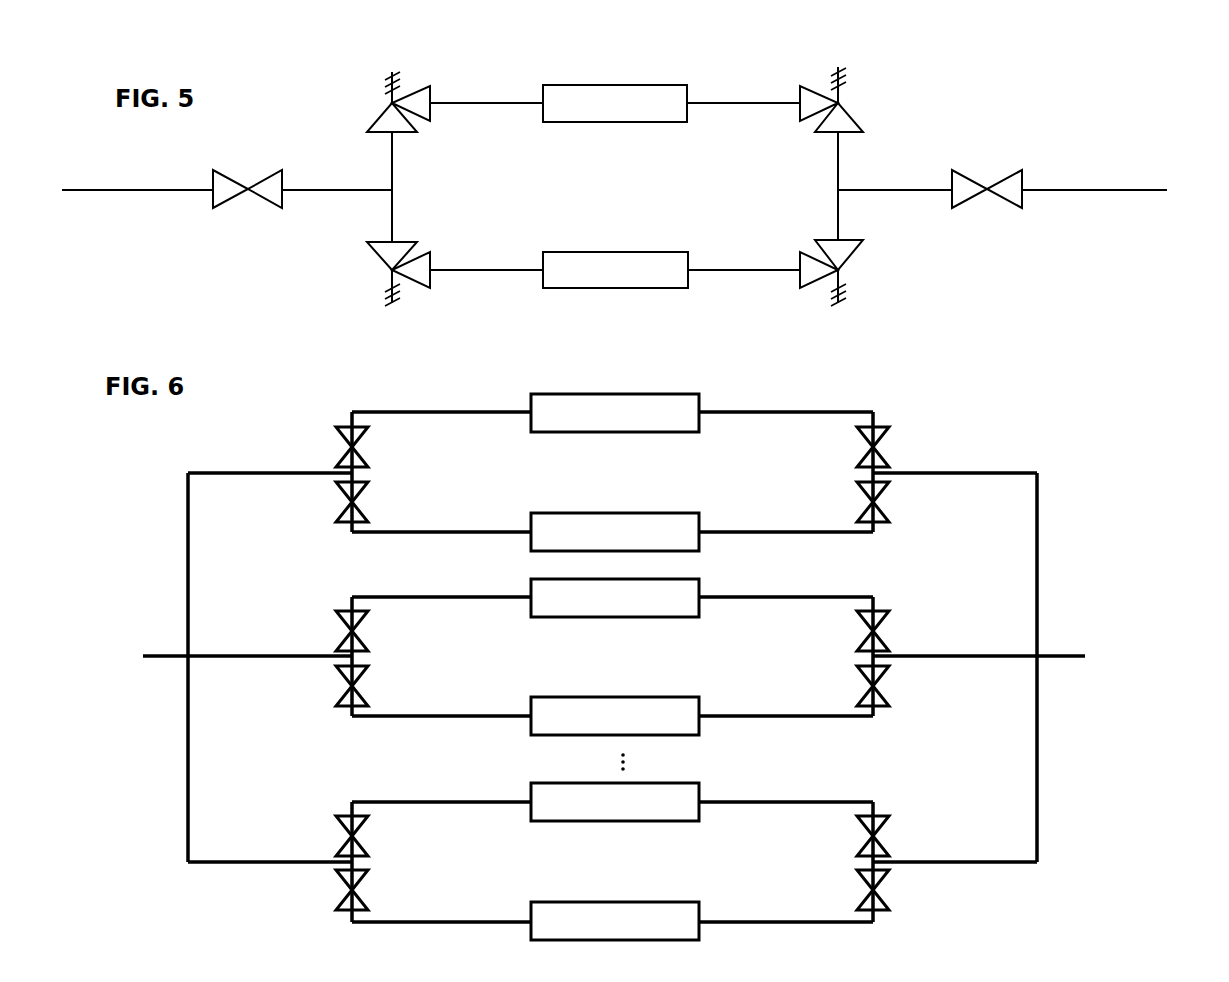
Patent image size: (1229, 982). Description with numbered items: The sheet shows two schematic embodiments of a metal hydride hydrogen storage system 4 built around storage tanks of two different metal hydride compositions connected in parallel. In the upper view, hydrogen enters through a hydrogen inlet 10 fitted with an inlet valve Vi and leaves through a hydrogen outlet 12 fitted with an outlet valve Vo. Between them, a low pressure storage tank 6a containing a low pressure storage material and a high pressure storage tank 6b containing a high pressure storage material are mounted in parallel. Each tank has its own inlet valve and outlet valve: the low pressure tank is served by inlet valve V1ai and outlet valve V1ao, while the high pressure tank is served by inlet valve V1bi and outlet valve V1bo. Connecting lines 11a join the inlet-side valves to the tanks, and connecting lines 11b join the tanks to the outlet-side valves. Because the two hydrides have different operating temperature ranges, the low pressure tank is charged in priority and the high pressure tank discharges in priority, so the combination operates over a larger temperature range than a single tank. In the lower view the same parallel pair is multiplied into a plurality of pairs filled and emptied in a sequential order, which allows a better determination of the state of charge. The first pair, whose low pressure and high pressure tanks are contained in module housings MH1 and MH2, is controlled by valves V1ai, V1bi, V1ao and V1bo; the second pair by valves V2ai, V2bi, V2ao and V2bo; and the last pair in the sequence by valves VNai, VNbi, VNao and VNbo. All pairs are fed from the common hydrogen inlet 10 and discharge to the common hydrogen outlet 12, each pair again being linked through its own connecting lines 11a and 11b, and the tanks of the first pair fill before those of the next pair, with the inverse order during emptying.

In FIG. 6, the storage system 4 is at (1055, 393).
In FIG. 5, the low pressure storage tank 6a is at (634, 75).
In FIG. 6, the low pressure storage tank 6a is at (628, 588).
In FIG. 5, the high pressure storage tank 6b is at (634, 293).
In FIG. 6, the high pressure storage tank 6b is at (650, 706).
In FIG. 5, the hydrogen inlet 10 is at (162, 190).
In FIG. 6, the hydrogen inlet 10 is at (162, 655).
In FIG. 5, the inlet connecting line 11a is at (498, 102).
In FIG. 6, the inlet connecting line 11a is at (502, 530).
In FIG. 5, the outlet connecting line 11b is at (735, 102).
In FIG. 6, the outlet connecting line 11b is at (747, 415).
In FIG. 5, the hydrogen outlet 12 is at (1075, 190).
In FIG. 6, the hydrogen outlet 12 is at (1069, 656).
In FIG. 5, the inlet valve Vi is at (248, 170).
In FIG. 5, the outlet valve Vo is at (985, 172).
In FIG. 5, the inlet valve V1ai is at (396, 83).
In FIG. 6, the inlet valve V1ai is at (297, 442).
In FIG. 5, the inlet valve V1bi is at (386, 297).
In FIG. 6, the inlet valve V1bi is at (300, 504).
In FIG. 5, the outlet valve V1ao is at (830, 77).
In FIG. 6, the outlet valve V1ao is at (917, 437).
In FIG. 5, the outlet valve V1bo is at (833, 295).
In FIG. 6, the outlet valve V1bo is at (921, 502).
In FIG. 6, the inlet valve V2ai is at (301, 628).
In FIG. 6, the inlet valve V2bi is at (299, 689).
In FIG. 6, the outlet valve V2ao is at (921, 624).
In FIG. 6, the outlet valve V2bo is at (921, 686).
In FIG. 6, the inlet valve VNai is at (299, 834).
In FIG. 6, the inlet valve VNbi is at (297, 890).
In FIG. 6, the outlet valve VNao is at (922, 829).
In FIG. 6, the outlet valve VNbo is at (923, 890).
In FIG. 6, the first module housing MH1 is at (563, 413).
In FIG. 6, the second module housing MH2 is at (557, 531).